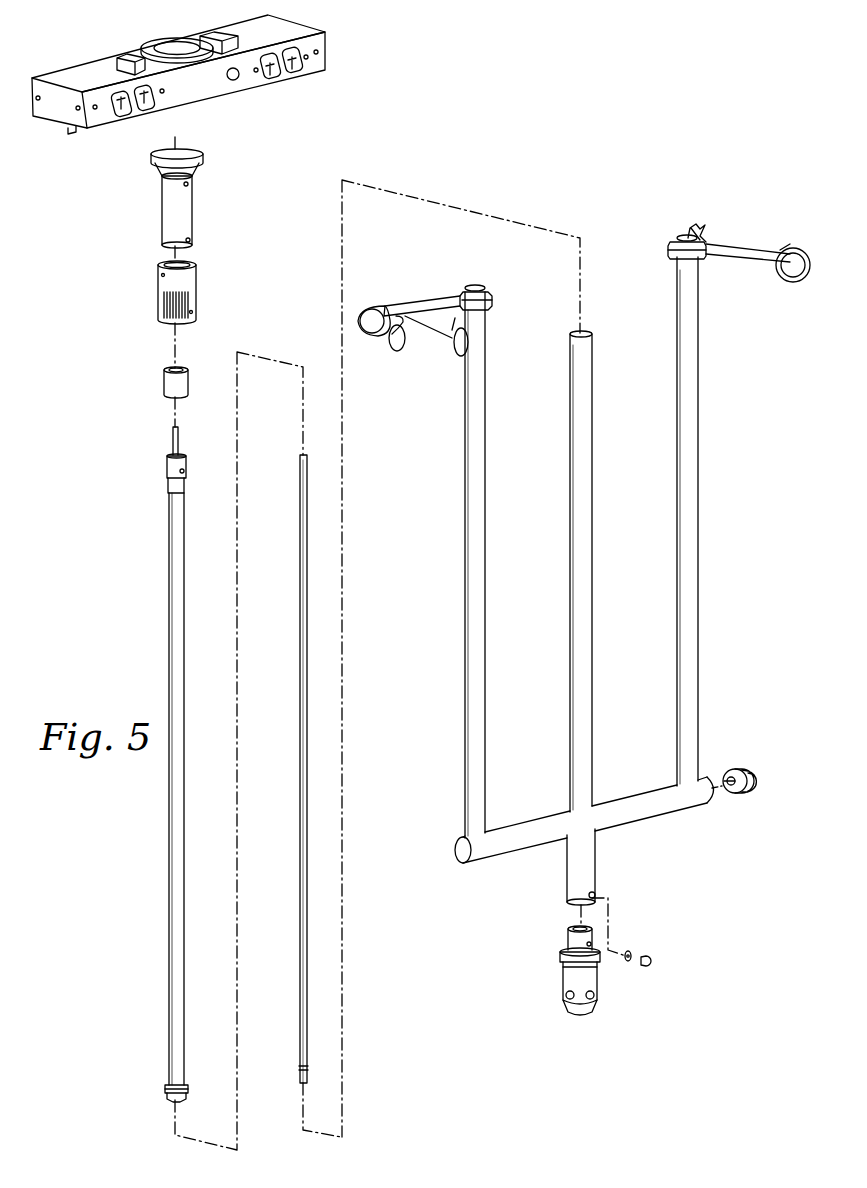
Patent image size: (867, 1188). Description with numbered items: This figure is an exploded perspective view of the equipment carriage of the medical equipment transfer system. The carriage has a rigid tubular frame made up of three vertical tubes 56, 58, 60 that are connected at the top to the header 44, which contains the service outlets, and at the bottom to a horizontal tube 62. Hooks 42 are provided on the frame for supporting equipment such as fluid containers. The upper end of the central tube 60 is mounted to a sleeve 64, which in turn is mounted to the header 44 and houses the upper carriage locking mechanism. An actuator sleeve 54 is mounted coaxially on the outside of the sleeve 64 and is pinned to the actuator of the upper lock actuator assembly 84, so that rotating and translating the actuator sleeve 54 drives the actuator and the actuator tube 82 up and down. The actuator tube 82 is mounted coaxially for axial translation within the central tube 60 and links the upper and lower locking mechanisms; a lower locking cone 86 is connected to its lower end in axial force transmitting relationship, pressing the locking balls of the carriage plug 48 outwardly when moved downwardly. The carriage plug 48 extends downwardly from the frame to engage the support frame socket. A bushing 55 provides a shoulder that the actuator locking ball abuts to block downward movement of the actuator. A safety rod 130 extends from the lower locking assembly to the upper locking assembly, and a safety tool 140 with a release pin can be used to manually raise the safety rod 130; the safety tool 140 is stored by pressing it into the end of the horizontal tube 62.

The header 44 is at (70, 68).
The sleeve 64 is at (192, 208).
The actuator sleeve 54 is at (158, 296).
The bushing 55 is at (164, 386).
The upper lock actuator assembly 84 is at (140, 470).
The actuator tube 82 is at (169, 560).
The lower locking cone 86 is at (166, 1090).
The safety rod 130 is at (300, 771).
The hooks 42 is at (394, 300).
The vertical tube 56 is at (465, 608).
The central tube 60 is at (570, 594).
The vertical tube 58 is at (677, 590).
The horizontal tube 62 is at (536, 855).
The safety tool 140 is at (740, 768).
The carriage plug 48 is at (545, 995).